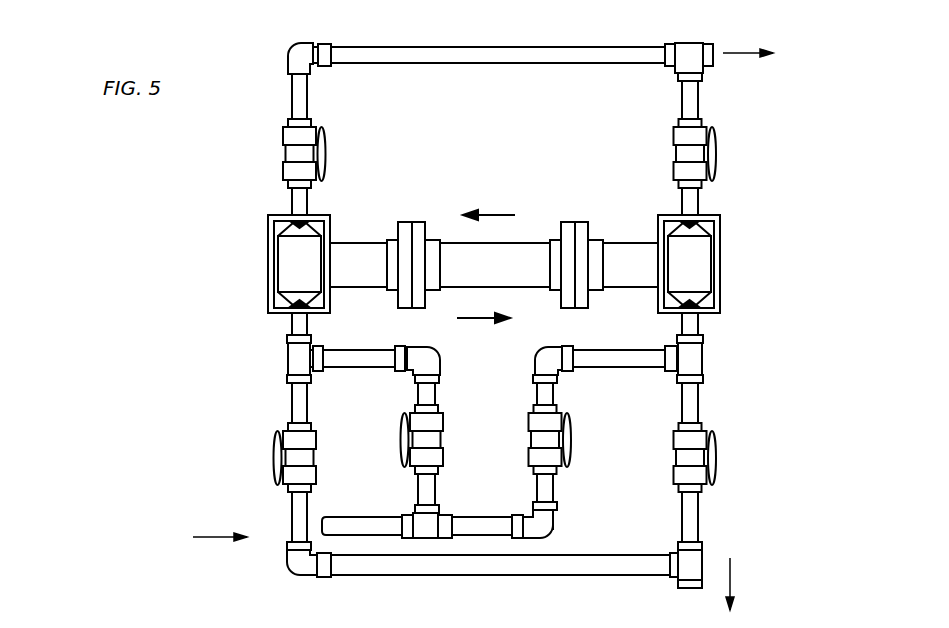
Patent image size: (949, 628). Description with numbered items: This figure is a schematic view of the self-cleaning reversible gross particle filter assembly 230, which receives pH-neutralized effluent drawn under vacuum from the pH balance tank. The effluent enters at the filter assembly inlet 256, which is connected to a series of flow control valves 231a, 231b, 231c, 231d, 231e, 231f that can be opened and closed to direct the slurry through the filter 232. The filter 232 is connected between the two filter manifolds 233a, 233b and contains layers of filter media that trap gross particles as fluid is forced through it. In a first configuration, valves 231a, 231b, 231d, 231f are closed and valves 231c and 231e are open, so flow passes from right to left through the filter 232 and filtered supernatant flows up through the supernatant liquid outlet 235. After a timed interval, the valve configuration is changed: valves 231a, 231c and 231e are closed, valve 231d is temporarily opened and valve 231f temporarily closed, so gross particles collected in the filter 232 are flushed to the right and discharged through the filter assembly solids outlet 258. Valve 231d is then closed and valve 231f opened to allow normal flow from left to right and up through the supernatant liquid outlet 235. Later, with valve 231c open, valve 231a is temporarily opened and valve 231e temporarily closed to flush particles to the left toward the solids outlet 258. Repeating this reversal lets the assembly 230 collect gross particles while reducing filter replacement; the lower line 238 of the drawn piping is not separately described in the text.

The self-cleaning reversible gross particle filter assembly 230 is at (832, 468).
The flow control valve 231a is at (274, 445).
The flow control valve 231b is at (401, 435).
The flow control valve 231c is at (574, 438).
The flow control valve 231d is at (717, 450).
The flow control valve 231e is at (323, 156).
The flow control valve 231f is at (672, 138).
The filter 232 is at (488, 197).
The filter manifold 233a is at (724, 228).
The filter manifold 233b is at (268, 245).
The supernatant liquid outlet 235 is at (677, 62).
The bottom drain conduit 238 is at (488, 335).
The filter assembly inlet 256 is at (357, 526).
The filter assembly solids outlet 258 is at (703, 555).